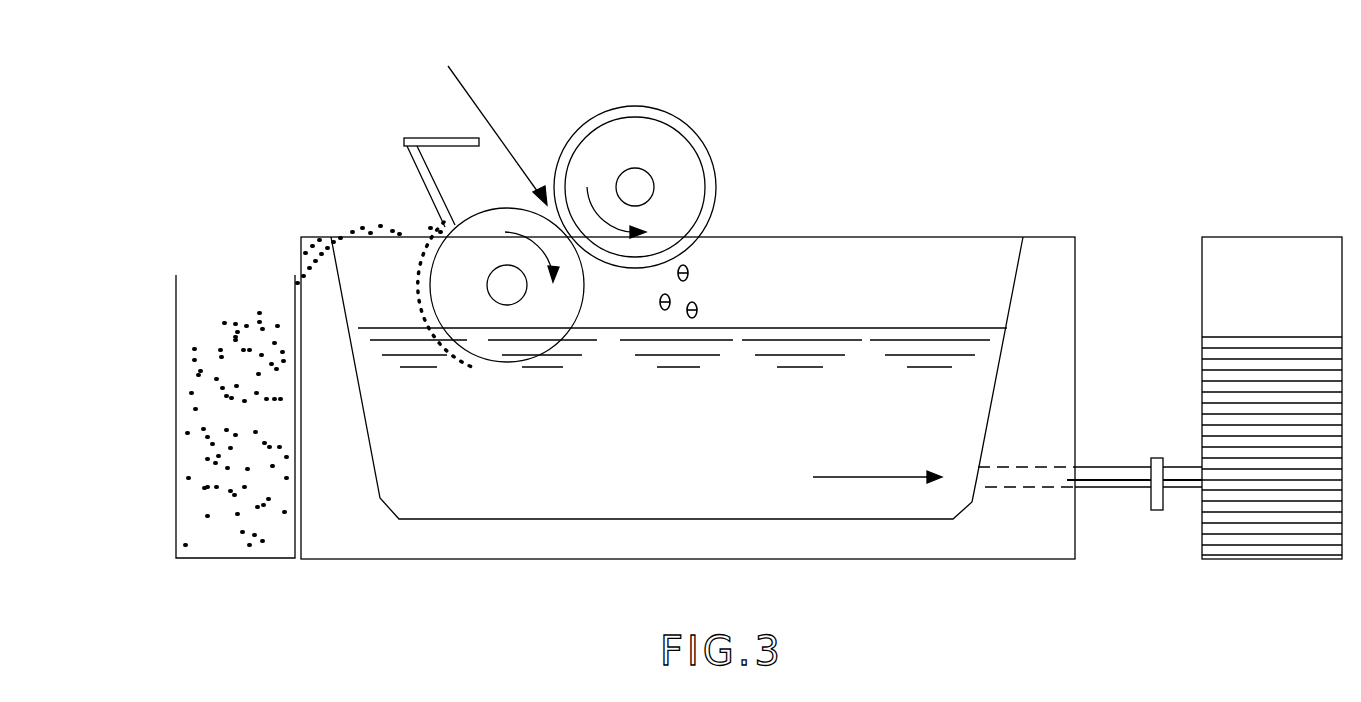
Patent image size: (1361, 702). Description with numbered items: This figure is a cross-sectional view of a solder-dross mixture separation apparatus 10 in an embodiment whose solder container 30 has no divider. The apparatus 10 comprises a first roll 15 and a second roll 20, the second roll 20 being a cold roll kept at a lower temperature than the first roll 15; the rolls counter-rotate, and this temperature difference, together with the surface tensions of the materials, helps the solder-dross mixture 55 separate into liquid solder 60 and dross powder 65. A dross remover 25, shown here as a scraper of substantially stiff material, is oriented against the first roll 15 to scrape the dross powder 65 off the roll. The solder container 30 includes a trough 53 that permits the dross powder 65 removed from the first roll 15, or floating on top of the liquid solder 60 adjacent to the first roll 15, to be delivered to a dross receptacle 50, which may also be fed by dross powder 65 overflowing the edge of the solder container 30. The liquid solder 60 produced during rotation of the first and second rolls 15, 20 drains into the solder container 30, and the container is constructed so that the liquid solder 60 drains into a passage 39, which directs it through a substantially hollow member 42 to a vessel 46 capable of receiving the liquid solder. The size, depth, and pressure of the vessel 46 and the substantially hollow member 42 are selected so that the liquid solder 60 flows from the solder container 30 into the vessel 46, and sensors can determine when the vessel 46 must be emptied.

The solder-dross mixture separation apparatus 10 is at (325, 598).
The first roll 15 is at (480, 207).
The second roll 20 is at (653, 107).
The dross remover 25 is at (412, 138).
The solder container 30 is at (393, 562).
The passage 39 is at (1000, 467).
The substantially hollow member 42 is at (1093, 467).
The vessel 46 is at (1202, 268).
The dross receptacle 50 is at (175, 293).
The trough 53 is at (300, 248).
The solder-dross mixture 55 is at (482, 120).
The liquid solder 60 is at (690, 268).
The dross powder 65 is at (228, 303).